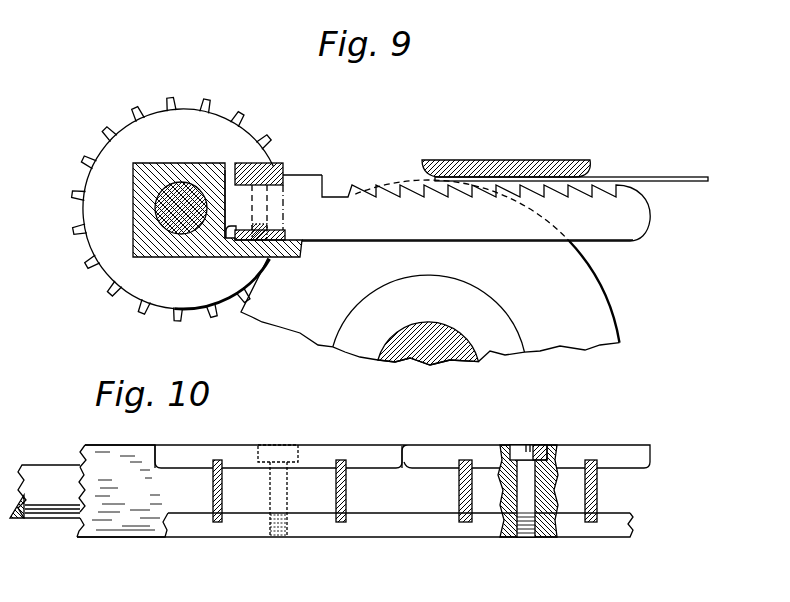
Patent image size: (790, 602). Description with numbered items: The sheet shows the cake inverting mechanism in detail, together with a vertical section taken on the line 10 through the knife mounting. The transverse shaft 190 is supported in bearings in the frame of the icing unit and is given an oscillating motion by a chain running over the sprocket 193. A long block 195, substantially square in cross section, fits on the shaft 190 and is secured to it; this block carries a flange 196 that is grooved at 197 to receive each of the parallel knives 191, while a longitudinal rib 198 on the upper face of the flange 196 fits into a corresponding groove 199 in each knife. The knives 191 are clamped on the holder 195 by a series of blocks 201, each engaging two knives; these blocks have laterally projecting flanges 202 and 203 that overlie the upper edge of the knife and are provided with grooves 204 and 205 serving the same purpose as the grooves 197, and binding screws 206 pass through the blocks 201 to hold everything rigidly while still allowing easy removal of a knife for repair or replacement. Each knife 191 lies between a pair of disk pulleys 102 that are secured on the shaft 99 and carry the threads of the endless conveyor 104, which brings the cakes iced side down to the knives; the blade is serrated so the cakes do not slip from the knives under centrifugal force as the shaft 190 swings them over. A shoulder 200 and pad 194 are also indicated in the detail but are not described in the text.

In FIG. 9, the section line 10— 10 is at (290, 97).
In FIG. 9, the shaft 99 is at (435, 355).
In FIG. 9, the disk pulley 102 is at (608, 328).
In FIG. 9, the endless conveyor 104 is at (647, 177).
In FIG. 9, the transverse shaft 190 is at (168, 205).
In FIG. 10, the transverse shaft 190 is at (47, 470).
In FIG. 9, the knife 191 is at (618, 233).
In FIG. 10, the knife 191 is at (213, 492).
In FIG. 9, the sprocket 193 is at (107, 259).
In FIG. 9, the pad 194 is at (497, 160).
In FIG. 9, the block 195 is at (133, 227).
In FIG. 10, the block 195 is at (127, 527).
In FIG. 9, the flange 196 is at (303, 252).
In FIG. 10, the flange 196 is at (428, 530).
In FIG. 10, the groove 197 is at (218, 523).
In FIG. 9, the longitudinal rib 198 is at (287, 230).
In FIG. 9, the groove 199 is at (228, 233).
In FIG. 9, the shoulder 200 is at (217, 213).
In FIG. 10, the block 201 is at (307, 505).
In FIG. 10, the laterally projecting flange 202 is at (163, 455).
In FIG. 10, the laterally projecting flange 203 is at (380, 450).
In FIG. 10, the groove 204 is at (213, 460).
In FIG. 10, the groove 205 is at (342, 460).
In FIG. 9, the binding screw 206 is at (267, 202).
In FIG. 10, the binding screw 206 is at (287, 445).